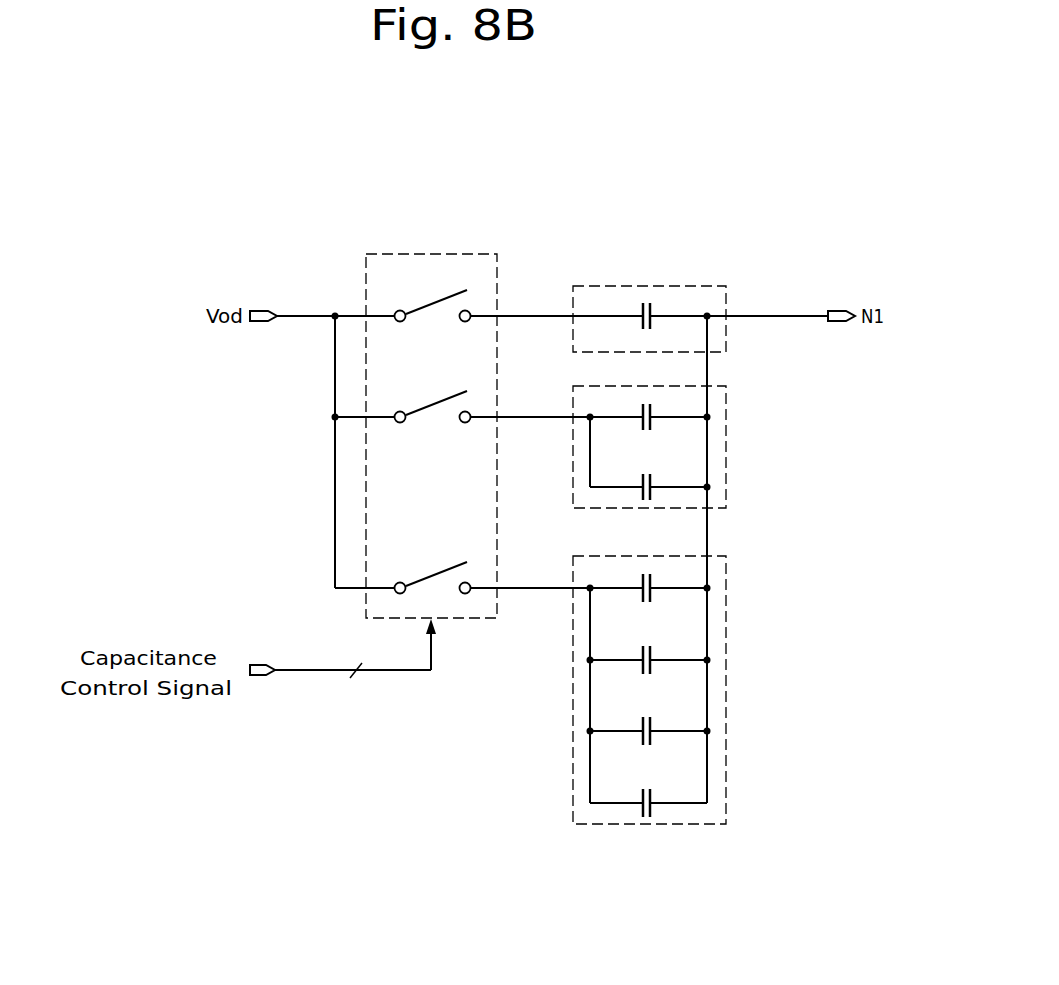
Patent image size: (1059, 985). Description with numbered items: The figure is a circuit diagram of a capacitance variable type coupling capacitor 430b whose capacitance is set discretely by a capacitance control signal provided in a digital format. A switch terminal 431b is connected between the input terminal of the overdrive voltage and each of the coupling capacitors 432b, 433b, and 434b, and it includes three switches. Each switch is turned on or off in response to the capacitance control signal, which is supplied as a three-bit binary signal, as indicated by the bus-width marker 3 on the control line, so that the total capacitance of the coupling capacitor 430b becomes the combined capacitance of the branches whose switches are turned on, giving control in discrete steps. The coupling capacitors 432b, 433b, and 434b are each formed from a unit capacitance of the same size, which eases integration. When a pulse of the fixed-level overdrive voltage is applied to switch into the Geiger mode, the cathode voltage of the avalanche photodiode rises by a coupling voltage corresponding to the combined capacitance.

The coupling capacitor 430b is at (731, 166).
The switch terminal 431b is at (458, 253).
The coupling capacitor 432b is at (726, 346).
The coupling capacitor 433b is at (726, 448).
The coupling capacitor 434b is at (726, 678).
The bit width of capacitance control signal 3 is at (356, 680).